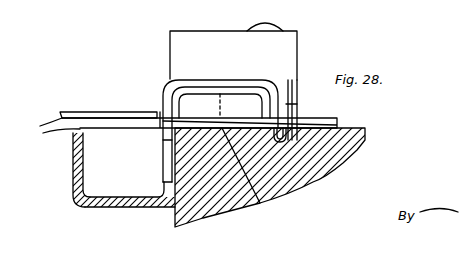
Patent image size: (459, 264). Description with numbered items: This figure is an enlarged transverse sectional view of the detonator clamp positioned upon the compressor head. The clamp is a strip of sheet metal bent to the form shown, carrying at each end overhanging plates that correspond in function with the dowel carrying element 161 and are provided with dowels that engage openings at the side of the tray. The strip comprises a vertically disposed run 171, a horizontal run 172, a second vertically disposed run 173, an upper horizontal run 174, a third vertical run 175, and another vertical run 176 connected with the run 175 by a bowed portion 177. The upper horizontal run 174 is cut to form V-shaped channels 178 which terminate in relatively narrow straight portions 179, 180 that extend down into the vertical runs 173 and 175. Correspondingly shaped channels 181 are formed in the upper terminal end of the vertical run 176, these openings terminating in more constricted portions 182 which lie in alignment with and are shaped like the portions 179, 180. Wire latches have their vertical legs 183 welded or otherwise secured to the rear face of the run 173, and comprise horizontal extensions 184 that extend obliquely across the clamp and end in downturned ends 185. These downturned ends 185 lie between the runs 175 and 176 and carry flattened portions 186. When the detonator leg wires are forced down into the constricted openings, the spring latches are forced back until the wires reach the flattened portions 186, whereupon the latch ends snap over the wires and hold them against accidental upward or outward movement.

The dowel carrying element 161 is at (245, 15).
The horizontal extension 184 is at (248, 48).
The V-shaped channel 178 is at (200, 89).
The upper horizontal run 174 is at (234, 90).
The third vertical run 175 is at (272, 117).
The channel 181 is at (288, 110).
The downturned end 185 is at (291, 107).
The vertical run 176 is at (297, 112).
The narrow straight portion 180 is at (298, 103).
The narrow straight portion 179 is at (172, 108).
The constricted portion 182 is at (337, 119).
The bowed portion 177 is at (345, 160).
The flattened portion 186 is at (345, 143).
The second vertically disposed run 173 is at (167, 159).
The vertical leg 183 is at (167, 142).
The vertically disposed run 171 is at (73, 179).
The horizontal run 172 is at (128, 204).